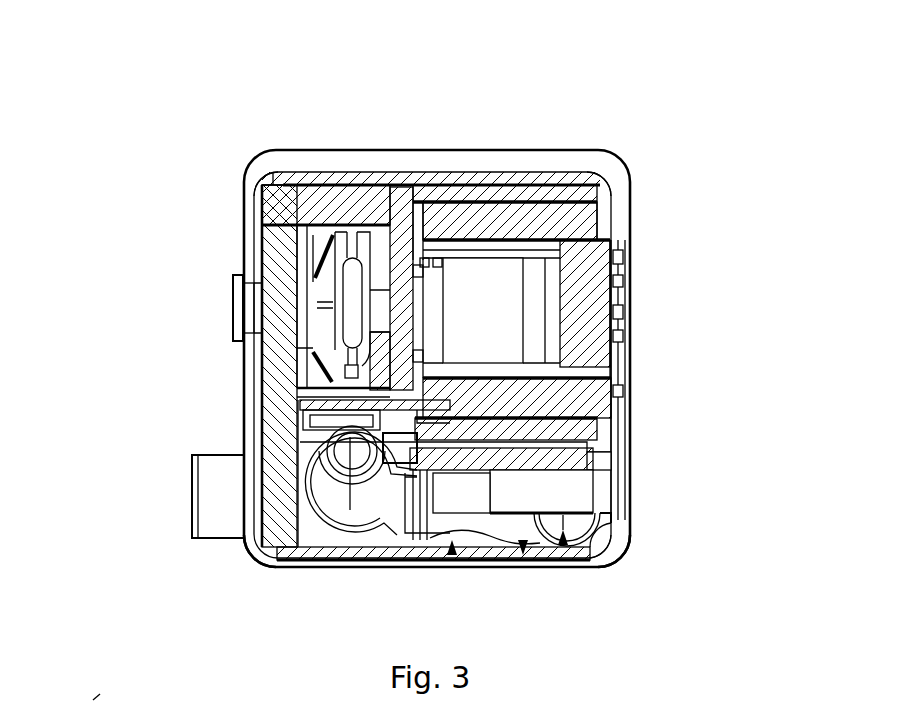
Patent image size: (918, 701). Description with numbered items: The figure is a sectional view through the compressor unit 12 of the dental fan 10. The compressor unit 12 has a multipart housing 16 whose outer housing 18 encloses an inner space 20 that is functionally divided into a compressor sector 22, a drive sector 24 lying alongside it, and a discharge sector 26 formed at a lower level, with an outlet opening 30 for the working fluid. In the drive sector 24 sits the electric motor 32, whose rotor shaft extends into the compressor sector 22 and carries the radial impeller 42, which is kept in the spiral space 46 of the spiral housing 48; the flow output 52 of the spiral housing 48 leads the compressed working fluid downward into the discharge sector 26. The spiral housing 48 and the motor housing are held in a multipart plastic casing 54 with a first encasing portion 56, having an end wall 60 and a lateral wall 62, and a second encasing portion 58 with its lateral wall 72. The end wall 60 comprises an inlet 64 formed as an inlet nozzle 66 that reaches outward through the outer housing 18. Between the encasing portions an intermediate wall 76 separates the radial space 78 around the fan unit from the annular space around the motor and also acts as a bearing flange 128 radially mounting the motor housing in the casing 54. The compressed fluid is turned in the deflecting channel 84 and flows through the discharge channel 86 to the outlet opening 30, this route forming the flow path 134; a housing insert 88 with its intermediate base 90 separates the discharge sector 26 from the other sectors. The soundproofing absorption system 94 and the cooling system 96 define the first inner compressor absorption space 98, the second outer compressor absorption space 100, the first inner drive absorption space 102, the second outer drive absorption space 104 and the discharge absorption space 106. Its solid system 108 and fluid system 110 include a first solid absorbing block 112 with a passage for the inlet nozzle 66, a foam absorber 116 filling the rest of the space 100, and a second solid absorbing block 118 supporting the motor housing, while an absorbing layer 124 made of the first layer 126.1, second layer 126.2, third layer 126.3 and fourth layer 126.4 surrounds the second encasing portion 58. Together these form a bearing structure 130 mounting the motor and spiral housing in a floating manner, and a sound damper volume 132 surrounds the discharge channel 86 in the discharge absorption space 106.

The fan 10 is at (142, 72).
The compressor unit 12 is at (645, 360).
The housing 16 is at (640, 408).
The outer housing 18 is at (628, 440).
The inner space 20 is at (450, 573).
The compressor sector 22 is at (340, 186).
The drive sector 24 is at (565, 238).
The discharge sector 26 is at (527, 573).
The outlet opening 30 is at (190, 515).
The electric motor 32 is at (597, 298).
The radial impeller 42 is at (243, 317).
The spiral space 46 is at (262, 240).
The spiral housing 48 is at (262, 215).
The flow output 52 is at (320, 572).
The casing 54 is at (500, 212).
The first encasing portion 56 is at (312, 195).
The second encasing portion 58 is at (545, 212).
The end wall 60 is at (298, 370).
The lateral wall 62 is at (386, 205).
The inlet 64 is at (232, 283).
The inlet nozzle 66 is at (233, 305).
The lateral wall 72 is at (453, 200).
The intermediate wall 76 is at (437, 190).
The radial space 78 is at (275, 183).
The deflecting channel 84 is at (280, 573).
The discharge channel 86 is at (583, 572).
The housing insert 88 is at (628, 524).
The intermediate base 90 is at (628, 492).
The soundproofing absorption system 94 is at (628, 305).
The cooling system 96 is at (240, 163).
The first, inner compressor absorption space 98 is at (262, 430).
The second, outer compressor absorption space 100 is at (262, 352).
The first, inner drive absorption space 102 is at (628, 385).
The second, outer drive absorption space 104 is at (628, 222).
The discharge absorption space 106 is at (628, 560).
The solid system 108 is at (640, 172).
The fluid system 110 is at (300, 393).
The first solid absorbing block 112 is at (262, 189).
The absorber 116 is at (262, 152).
The second solid absorbing block 118 is at (628, 345).
The absorbing layer 124 is at (628, 248).
The first layer 126.1 is at (630, 462).
The second layer 126.2 is at (628, 176).
The third layer 126.3 is at (586, 210).
The fourth layer 126.4 is at (507, 238).
The bearing flange 128 is at (400, 212).
The bearing structure 130 is at (628, 330).
The sound damper volume 132 is at (477, 573).
The flow path 134 is at (385, 515).